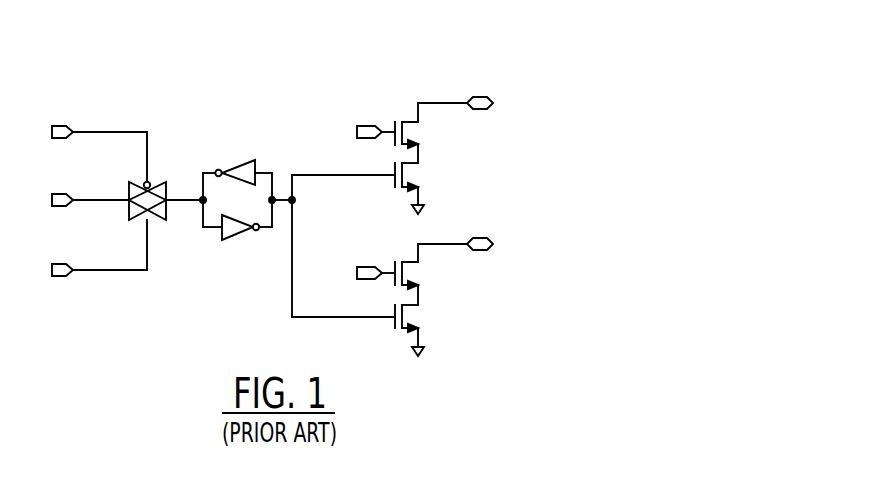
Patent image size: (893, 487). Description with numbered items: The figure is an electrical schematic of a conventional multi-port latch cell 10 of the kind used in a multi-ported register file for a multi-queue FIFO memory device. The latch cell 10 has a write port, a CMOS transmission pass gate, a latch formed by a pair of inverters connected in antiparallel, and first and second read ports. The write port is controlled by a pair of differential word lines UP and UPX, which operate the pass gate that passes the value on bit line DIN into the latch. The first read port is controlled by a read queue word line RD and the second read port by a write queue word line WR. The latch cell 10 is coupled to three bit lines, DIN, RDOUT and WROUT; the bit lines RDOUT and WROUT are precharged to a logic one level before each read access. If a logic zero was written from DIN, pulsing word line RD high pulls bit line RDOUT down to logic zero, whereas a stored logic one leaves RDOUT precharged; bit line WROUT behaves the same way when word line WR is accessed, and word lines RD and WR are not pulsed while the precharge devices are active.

The multi-port latch cell 10 is at (448, 68).
The differential word line UPX is at (78, 151).
The bit line DIN is at (70, 200).
The differential word line UP is at (83, 251).
The read queue word line RD is at (360, 134).
The write queue word line WR is at (358, 275).
The bit line RDOUT is at (491, 104).
The bit line WROUT is at (493, 245).